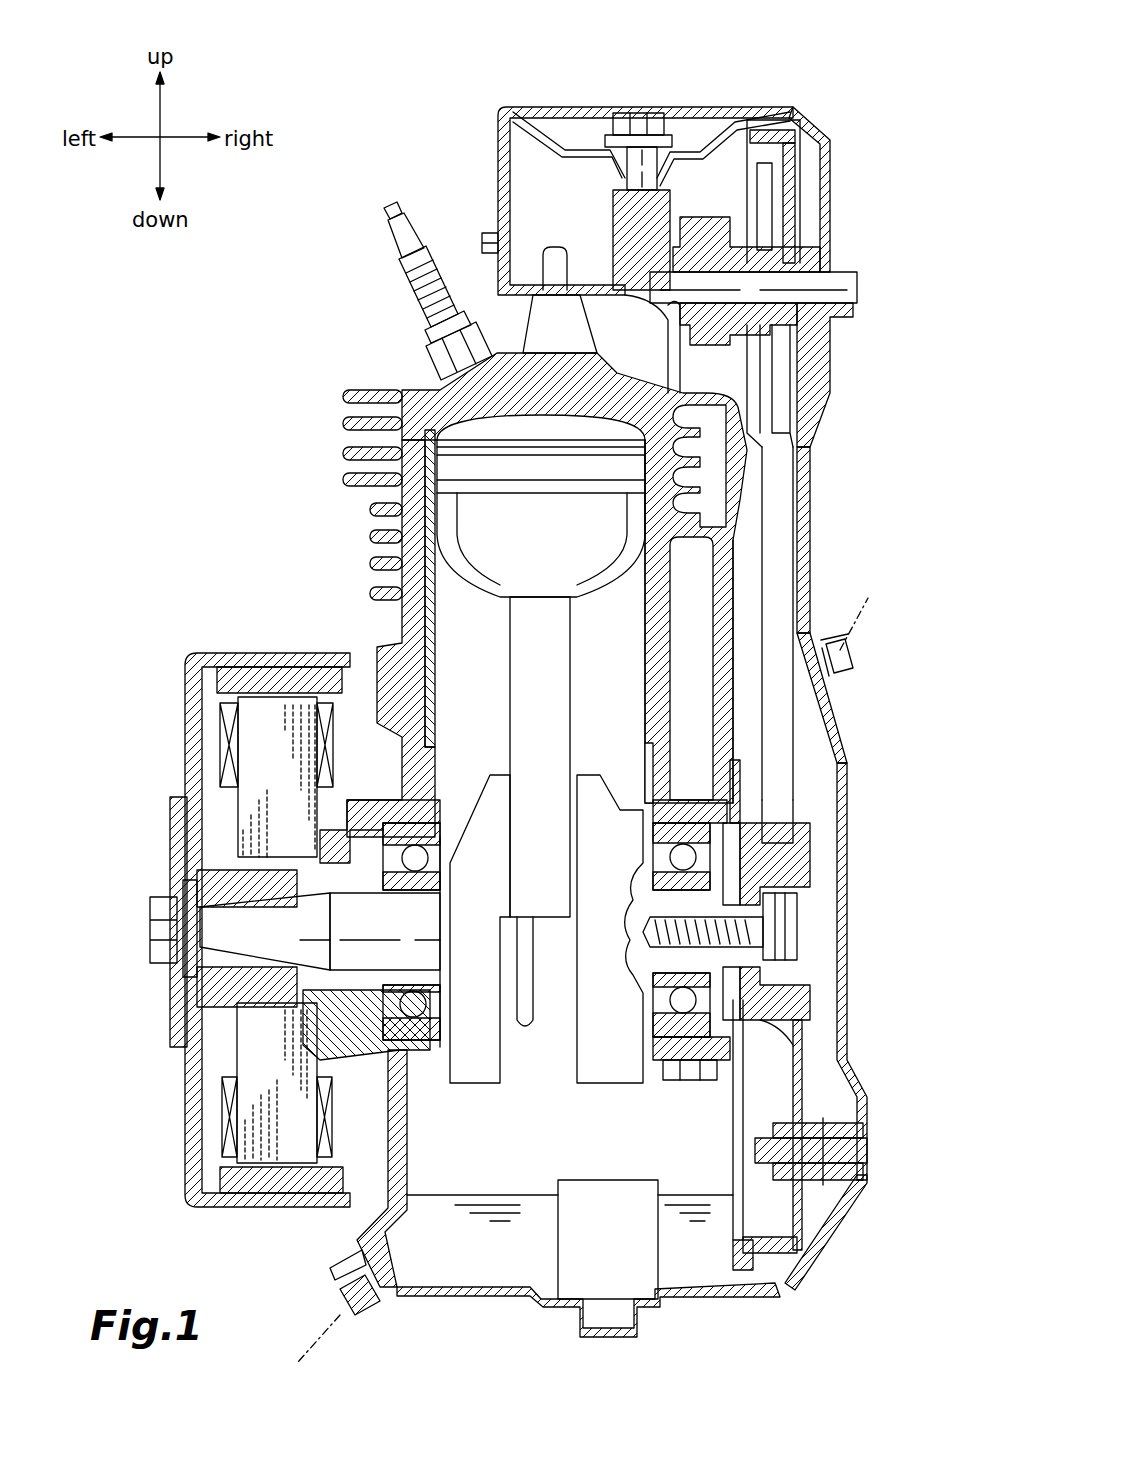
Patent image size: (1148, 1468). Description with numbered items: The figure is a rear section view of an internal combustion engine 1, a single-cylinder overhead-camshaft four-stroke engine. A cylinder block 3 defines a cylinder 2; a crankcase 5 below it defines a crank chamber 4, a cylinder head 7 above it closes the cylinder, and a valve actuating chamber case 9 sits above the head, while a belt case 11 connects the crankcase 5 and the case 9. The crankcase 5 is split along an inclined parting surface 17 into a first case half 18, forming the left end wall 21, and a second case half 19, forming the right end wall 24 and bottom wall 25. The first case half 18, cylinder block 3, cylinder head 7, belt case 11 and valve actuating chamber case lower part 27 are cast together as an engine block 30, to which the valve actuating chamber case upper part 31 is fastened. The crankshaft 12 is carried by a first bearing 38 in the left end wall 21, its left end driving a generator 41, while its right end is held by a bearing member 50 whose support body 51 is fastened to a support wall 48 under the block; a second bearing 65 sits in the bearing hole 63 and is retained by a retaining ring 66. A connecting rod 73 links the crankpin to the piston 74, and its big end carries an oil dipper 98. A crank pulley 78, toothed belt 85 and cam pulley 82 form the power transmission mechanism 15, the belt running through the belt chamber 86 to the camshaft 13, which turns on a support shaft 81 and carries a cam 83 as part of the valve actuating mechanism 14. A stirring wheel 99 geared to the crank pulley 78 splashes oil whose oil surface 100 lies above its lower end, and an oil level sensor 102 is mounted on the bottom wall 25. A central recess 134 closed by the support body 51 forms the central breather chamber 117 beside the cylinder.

The internal combustion engine 1 is at (278, 272).
The cylinder 2 is at (437, 683).
The cylinder block 3 is at (390, 575).
The crank chamber 4 is at (456, 1172).
The crankcase 5 is at (414, 1295).
The cylinder head 7 is at (410, 390).
The valve actuating chamber case 9 is at (520, 105).
The belt case 11 is at (832, 357).
The crankshaft 12 is at (146, 914).
The camshaft 13 is at (730, 212).
The valve actuating mechanism 14 is at (700, 158).
The power transmission mechanism 15 is at (800, 800).
The parting surface 17 is at (875, 600).
The first case half 18 is at (386, 1157).
The second case half 19 is at (832, 727).
The left end wall 21 is at (312, 1172).
The right end wall 24 is at (850, 930).
The bottom wall 25 is at (462, 1298).
The valve actuating chamber case lower part 27 is at (496, 268).
The engine block 30 is at (347, 387).
The valve actuating chamber case upper part 31 is at (792, 107).
The first bearing 38 is at (396, 812).
The generator 41 is at (195, 651).
The support wall 48 is at (722, 790).
The bearing member 50 is at (670, 1086).
The support body 51 is at (660, 812).
The bearing hole 63 is at (655, 1040).
The second bearing 65 is at (700, 1052).
The retaining ring 66 is at (795, 840).
The connecting rod 73 is at (570, 677).
The piston 74 is at (495, 557).
The crank pulley 78 is at (805, 1003).
The support shaft 81 is at (858, 283).
The cam pulley 82 is at (772, 188).
The cam 83 is at (693, 180).
The toothed belt 85 is at (782, 480).
The belt chamber 86 is at (745, 577).
The oil dipper 98 is at (527, 1034).
The stirring wheel 99 is at (808, 1222).
The oil surface 100 is at (500, 1193).
The oil level sensor 102 is at (565, 1245).
The central breather chamber 117 is at (695, 672).
The central recess 134 is at (678, 588).